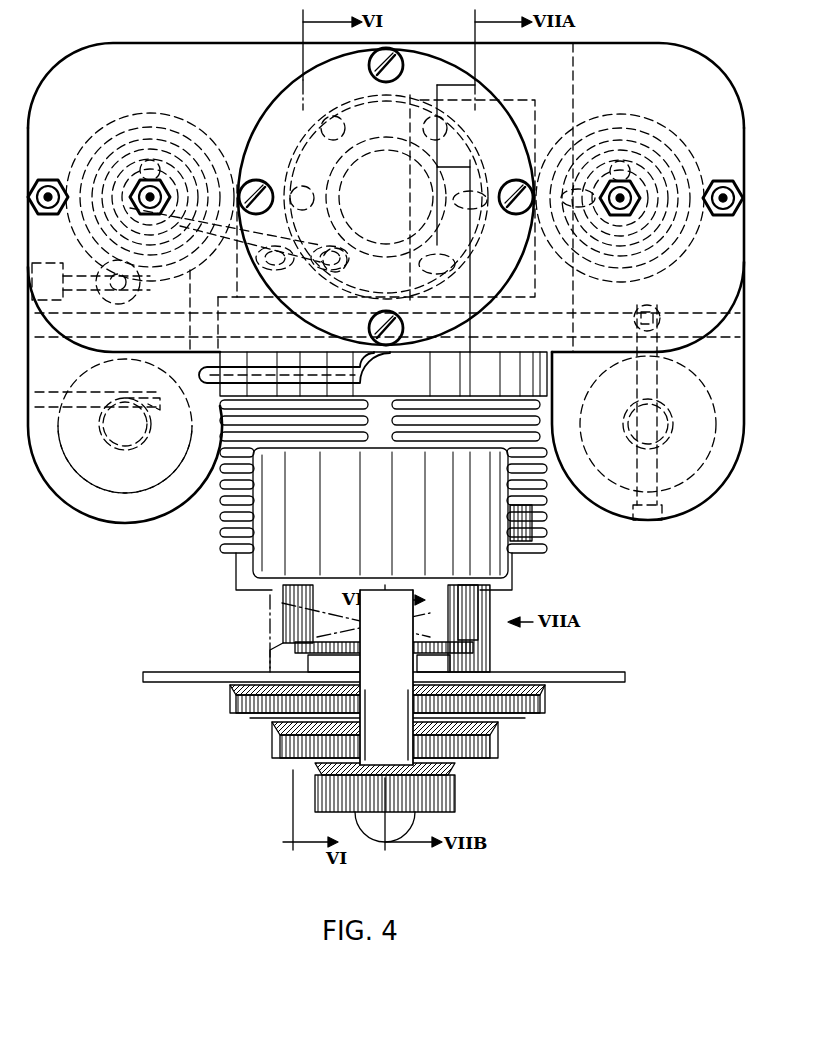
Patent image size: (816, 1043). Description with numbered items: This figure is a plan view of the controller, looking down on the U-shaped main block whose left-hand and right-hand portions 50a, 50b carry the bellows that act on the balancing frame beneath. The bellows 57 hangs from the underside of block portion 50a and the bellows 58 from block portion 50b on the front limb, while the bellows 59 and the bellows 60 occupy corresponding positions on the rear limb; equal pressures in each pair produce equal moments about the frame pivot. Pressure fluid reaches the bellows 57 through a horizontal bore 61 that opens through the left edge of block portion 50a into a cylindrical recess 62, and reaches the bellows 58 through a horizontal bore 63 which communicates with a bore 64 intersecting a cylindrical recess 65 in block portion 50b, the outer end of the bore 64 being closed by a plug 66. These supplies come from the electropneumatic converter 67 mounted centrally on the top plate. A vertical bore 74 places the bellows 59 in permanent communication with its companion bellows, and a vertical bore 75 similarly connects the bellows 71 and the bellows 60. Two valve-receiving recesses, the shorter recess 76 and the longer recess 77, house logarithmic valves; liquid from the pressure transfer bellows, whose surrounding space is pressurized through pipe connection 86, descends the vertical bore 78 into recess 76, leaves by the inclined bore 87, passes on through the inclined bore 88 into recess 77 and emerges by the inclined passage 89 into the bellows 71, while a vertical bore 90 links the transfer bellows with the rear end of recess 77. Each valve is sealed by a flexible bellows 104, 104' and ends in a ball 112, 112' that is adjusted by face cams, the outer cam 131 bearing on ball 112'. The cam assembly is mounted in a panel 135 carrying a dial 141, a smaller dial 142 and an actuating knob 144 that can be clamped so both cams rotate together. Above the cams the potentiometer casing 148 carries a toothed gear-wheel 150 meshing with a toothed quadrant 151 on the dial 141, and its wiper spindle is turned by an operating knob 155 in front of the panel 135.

The block portion 50a is at (72, 506).
The block portion 50b is at (733, 475).
The bellows 57 is at (128, 486).
The bellows 58 is at (690, 478).
The bellows 59 is at (153, 133).
The bellows 60 is at (630, 137).
The horizontal bore 61 is at (125, 426).
The cylindrical recess 62 is at (152, 424).
The horizontal bore 63 is at (43, 338).
The bore 64 is at (660, 380).
The cylindrical recess 65 is at (668, 440).
The plug 66 is at (652, 518).
The electropneumatic converter 67 is at (286, 100).
The bellows 71 is at (674, 260).
The vertical bore 74 is at (132, 145).
The vertical bore 75 is at (640, 170).
The valve-receiving recess 76 is at (366, 194).
The valve-receiving recess 77 is at (412, 234).
The vertical bore 78 is at (288, 168).
The pipe connection 86 is at (214, 386).
The inclined bore 87 is at (252, 300).
The inclined bore 88 is at (330, 260).
The inclined passage 89 is at (511, 226).
The vertical bore 90 is at (450, 130).
The flexible bellows 104 is at (265, 495).
The flexible bellows 104' is at (489, 495).
The ball 112 is at (260, 628).
The ball 112' is at (508, 602).
The outer cam 131 is at (496, 612).
The panel 135 is at (608, 672).
The dial 141 is at (538, 712).
The dial 142 is at (492, 760).
The actuating knob 144 is at (448, 810).
The casing 148 is at (350, 523).
The toothed gear-wheel 150 is at (474, 646).
The toothed quadrant 151 is at (452, 665).
The operating knob 155 is at (448, 783).